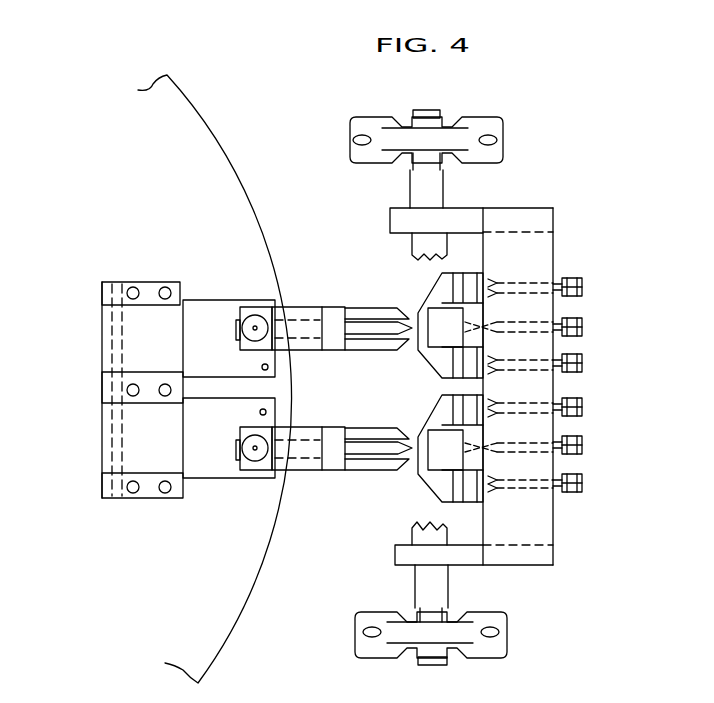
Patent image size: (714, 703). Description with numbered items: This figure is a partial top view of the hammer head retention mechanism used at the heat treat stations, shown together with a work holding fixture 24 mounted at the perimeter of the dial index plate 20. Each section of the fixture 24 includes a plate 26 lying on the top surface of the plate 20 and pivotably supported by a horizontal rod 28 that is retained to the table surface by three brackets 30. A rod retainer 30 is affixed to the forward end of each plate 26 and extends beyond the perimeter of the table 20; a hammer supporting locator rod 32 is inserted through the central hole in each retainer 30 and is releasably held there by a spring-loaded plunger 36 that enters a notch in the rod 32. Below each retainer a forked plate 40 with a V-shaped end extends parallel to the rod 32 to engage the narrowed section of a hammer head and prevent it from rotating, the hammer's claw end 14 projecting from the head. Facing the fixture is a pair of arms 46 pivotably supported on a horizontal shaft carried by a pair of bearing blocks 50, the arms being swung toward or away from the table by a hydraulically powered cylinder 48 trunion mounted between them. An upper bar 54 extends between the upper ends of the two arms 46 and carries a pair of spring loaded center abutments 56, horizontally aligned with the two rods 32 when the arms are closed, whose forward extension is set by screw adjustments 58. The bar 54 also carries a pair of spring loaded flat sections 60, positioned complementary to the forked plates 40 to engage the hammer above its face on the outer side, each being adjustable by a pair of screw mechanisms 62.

The claw end 14 is at (380, 696).
The dial index plate 20 is at (230, 578).
The work holding fixture 24 is at (96, 468).
The plate 26 is at (213, 310).
The horizontal rod 28 is at (112, 436).
The bracket / rod retainer 30 is at (152, 285).
The hammer supporting locator rod 32 is at (355, 322).
The spring-loaded plunger 36 is at (246, 336).
The plate with V-shaped end 40 is at (362, 347).
The arm 46 is at (465, 218).
The hydraulically powered cylinder 48 is at (435, 617).
The bearing block 50 is at (487, 122).
The upper bar 54 is at (552, 520).
The center abutment 56 is at (443, 330).
The screw adjustment 58 is at (582, 326).
The flat section 60 is at (443, 300).
The screw mechanism 62 is at (515, 283).